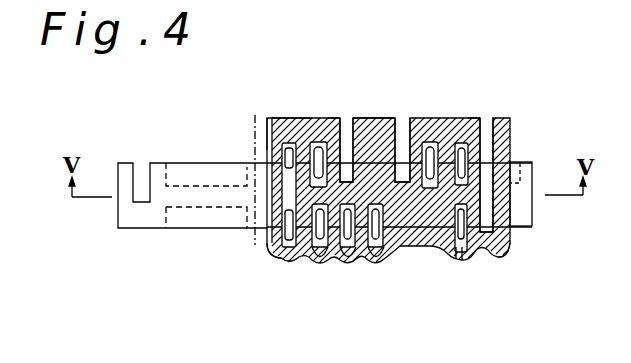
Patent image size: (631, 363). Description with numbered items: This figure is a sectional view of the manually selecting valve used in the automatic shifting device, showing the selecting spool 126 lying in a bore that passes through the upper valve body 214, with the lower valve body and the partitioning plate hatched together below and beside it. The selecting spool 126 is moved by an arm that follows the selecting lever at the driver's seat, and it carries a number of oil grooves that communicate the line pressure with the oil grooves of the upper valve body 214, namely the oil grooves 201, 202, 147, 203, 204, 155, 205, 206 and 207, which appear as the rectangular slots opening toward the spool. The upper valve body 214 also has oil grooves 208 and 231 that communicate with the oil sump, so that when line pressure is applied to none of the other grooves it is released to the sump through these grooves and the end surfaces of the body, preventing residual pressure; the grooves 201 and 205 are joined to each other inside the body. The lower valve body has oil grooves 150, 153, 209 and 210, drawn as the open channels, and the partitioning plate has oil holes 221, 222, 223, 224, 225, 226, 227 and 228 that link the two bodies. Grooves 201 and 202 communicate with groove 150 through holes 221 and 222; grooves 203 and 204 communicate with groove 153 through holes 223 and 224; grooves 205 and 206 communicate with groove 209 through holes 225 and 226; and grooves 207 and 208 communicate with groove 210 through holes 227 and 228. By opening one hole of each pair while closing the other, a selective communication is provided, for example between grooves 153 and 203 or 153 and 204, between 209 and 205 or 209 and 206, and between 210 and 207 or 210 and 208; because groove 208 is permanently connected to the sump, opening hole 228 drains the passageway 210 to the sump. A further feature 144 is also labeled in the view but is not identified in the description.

The selecting spool 126 is at (190, 218).
The oil groove 209 is at (260, 133).
The oil hole 221 is at (271, 124).
The oil groove 201 is at (284, 141).
The oil groove 150 is at (298, 128).
The oil groove 202 is at (316, 140).
The oil hole 222 is at (331, 118).
The oil groove 147 is at (347, 118).
The oil groove 210 is at (370, 118).
The second channel 144 is at (400, 118).
The oil groove 153 is at (446, 118).
The oil groove 204 is at (458, 118).
The oil hole 224 is at (470, 118).
The oil groove 155 is at (490, 118).
The upper valve body 214 is at (502, 250).
The oil hole 225 is at (272, 253).
The oil groove 205 is at (285, 260).
The oil hole 226 is at (313, 260).
The oil groove 206 is at (323, 260).
The oil groove 207 is at (348, 260).
The oil hole 227 is at (360, 260).
The oil groove 208 is at (375, 260).
The oil hole 228 is at (387, 260).
The oil hole 223 is at (428, 247).
The oil groove 231 is at (465, 253).
The oil groove 203 is at (455, 253).